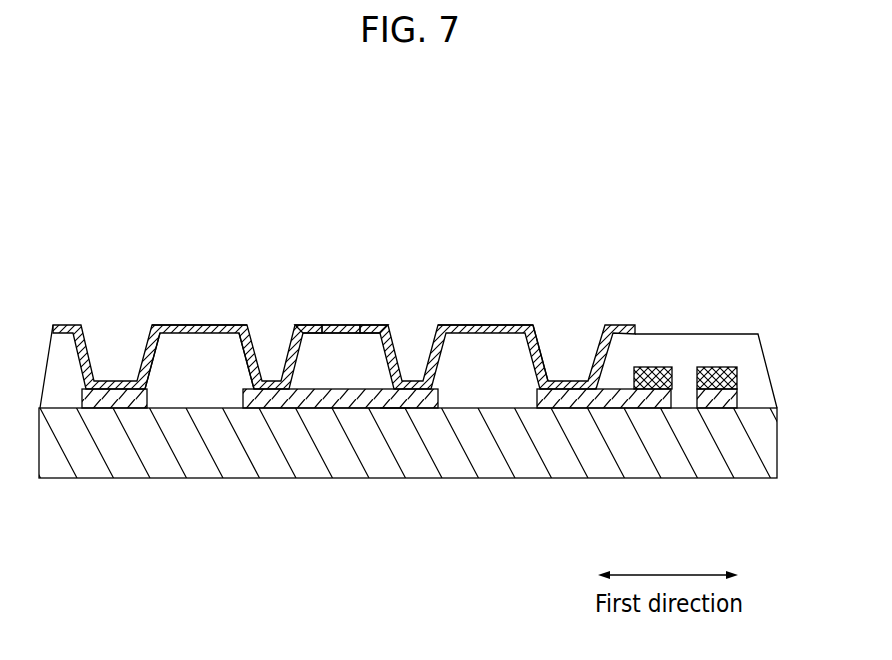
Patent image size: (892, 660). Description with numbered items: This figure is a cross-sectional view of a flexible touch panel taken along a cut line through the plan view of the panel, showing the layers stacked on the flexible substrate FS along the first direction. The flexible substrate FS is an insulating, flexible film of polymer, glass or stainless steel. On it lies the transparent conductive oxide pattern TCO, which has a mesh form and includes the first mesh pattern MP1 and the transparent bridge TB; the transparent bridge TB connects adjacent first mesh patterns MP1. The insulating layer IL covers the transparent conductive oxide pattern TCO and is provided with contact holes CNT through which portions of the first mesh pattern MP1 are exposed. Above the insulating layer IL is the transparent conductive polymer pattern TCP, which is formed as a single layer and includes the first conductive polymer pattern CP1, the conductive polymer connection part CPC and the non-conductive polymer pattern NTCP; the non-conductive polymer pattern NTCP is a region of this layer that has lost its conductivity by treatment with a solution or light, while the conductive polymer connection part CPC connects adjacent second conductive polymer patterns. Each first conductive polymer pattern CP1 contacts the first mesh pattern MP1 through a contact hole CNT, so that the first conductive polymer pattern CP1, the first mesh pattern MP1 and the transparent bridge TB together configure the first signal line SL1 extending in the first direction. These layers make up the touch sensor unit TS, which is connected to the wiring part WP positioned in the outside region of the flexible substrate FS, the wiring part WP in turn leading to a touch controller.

The flexible substrate FS is at (678, 467).
The insulating layer IL is at (726, 344).
The first mesh pattern MP1 is at (112, 408).
The transparent bridge TB is at (307, 408).
The transparent conductive oxide pattern TCO is at (393, 423).
The first conductive polymer pattern CP1 is at (195, 325).
The first signal line SL1 is at (241, 314).
The non-conductive polymer pattern NTCP is at (318, 325).
The conductive polymer connection part CPC is at (343, 325).
The transparent conductive polymer pattern TCP is at (451, 314).
The touch sensor unit TS is at (546, 310).
The wiring part WP is at (653, 367).
The contact hole CNT is at (243, 363).